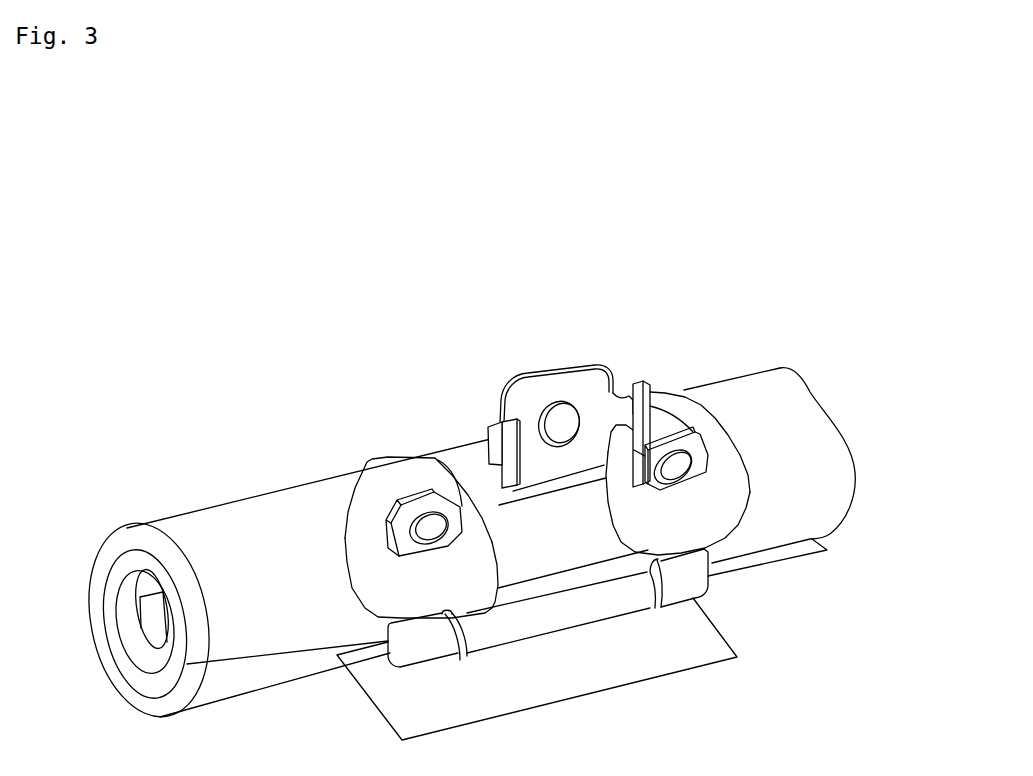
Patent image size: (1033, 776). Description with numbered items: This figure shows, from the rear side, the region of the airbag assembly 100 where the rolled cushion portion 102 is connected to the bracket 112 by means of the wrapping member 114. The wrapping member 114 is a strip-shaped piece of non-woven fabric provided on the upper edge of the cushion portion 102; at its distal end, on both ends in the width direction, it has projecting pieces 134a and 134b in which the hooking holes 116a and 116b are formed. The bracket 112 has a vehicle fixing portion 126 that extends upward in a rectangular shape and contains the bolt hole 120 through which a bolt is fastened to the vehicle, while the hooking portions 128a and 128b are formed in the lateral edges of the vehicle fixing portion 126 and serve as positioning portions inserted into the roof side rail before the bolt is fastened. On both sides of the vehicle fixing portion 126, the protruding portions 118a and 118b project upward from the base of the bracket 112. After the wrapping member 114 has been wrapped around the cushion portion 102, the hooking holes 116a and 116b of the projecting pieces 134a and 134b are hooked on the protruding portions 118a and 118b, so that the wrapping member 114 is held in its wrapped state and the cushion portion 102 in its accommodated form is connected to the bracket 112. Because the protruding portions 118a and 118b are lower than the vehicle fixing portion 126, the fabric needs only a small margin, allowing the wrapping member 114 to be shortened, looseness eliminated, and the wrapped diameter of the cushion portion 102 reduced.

The clamp 100 is at (318, 315).
The cushion portion 102 is at (203, 520).
The bracket 112 is at (528, 376).
The wrapping member 114 is at (723, 633).
The hooking hole 116a is at (645, 487).
The hooking hole 116b is at (380, 482).
The protruding portion 118a is at (695, 437).
The protruding portion 118b is at (392, 509).
The bolt hole 120 is at (566, 401).
The vehicle fixing portion 126 is at (598, 383).
The hooking portion 128a is at (649, 376).
The hooking portion 128b is at (503, 432).
The projecting piece 134a is at (750, 495).
The projecting piece 134b is at (370, 593).